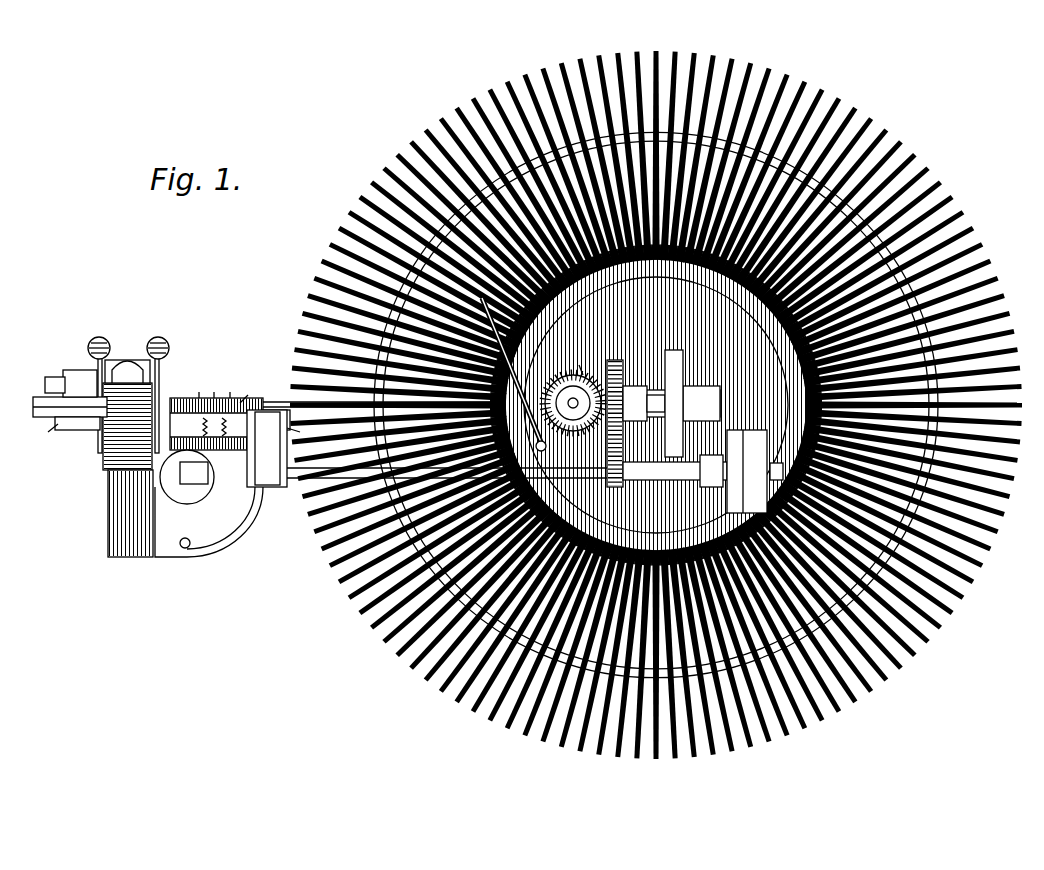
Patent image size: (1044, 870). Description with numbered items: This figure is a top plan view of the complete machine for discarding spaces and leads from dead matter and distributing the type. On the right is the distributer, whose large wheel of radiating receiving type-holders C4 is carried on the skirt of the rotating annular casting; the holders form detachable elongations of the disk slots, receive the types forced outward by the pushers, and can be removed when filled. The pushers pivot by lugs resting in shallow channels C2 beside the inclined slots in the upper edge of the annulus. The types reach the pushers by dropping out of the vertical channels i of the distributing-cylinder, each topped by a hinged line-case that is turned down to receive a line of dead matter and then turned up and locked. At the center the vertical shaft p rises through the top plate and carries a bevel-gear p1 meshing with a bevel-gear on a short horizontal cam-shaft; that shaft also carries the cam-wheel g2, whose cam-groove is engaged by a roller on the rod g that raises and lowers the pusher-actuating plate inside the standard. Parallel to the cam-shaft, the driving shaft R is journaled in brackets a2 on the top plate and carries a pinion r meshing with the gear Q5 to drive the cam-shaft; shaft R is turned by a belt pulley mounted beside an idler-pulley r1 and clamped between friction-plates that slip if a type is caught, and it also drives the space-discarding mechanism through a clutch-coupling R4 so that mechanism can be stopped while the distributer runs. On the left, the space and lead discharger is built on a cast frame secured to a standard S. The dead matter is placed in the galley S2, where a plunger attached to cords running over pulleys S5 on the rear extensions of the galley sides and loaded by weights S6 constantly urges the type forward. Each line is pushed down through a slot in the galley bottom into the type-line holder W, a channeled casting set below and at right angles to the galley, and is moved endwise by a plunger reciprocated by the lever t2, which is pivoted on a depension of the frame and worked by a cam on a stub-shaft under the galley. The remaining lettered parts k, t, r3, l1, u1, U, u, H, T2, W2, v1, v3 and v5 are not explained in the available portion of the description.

The receiving type-holders C4 is at (665, 396).
The shallow channels C2 is at (408, 569).
The gear Q5 is at (656, 405).
The lever k is at (514, 374).
The vertical shaft p is at (573, 403).
The bevel-gear p1 is at (583, 365).
The rod g is at (631, 423).
The cam-wheel g2 is at (671, 394).
The shaft R is at (497, 471).
The brackets a2 is at (652, 497).
The pinion r is at (615, 505).
The idler-pulley r1 is at (742, 411).
The shaft collar r3 is at (781, 410).
The nut t is at (793, 435).
The bearing l1 is at (787, 375).
The channels i is at (735, 350).
The rod u1 is at (384, 396).
The standard U is at (127, 406).
The standard casing u is at (126, 429).
The frame H is at (126, 455).
The galley S2 is at (116, 513).
The weights S6 is at (99, 387).
The pulleys S5 is at (167, 395).
The type-line holder W is at (70, 399).
The block T2 is at (71, 380).
The lever t2 is at (66, 430).
The bar W2 is at (216, 414).
The springs v5 is at (203, 427).
The pin v1 is at (249, 391).
The bracket v3 is at (289, 425).
The clutch-coupling R4 is at (221, 483).
The standard S is at (187, 499).